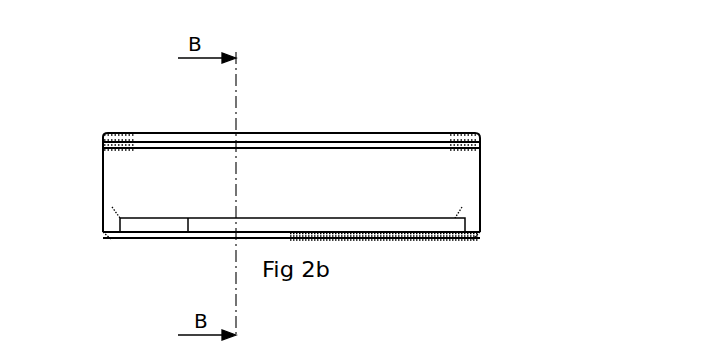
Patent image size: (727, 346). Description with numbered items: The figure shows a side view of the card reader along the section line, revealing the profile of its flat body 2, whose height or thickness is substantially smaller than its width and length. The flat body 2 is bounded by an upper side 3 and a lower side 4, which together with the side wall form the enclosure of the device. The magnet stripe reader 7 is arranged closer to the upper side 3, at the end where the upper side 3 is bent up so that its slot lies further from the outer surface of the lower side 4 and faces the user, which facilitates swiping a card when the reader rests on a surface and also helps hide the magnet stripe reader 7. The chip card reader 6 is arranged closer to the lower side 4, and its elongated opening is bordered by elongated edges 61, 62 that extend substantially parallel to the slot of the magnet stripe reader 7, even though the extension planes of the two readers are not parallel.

The flat body 2 is at (88, 136).
The upper side 3 is at (307, 134).
The magnet stripe reader 7 is at (422, 140).
The lower side 4 is at (118, 240).
The chip card reader 6 is at (188, 232).
The elongated edge 61 is at (406, 215).
The elongated edge 62 is at (381, 239).